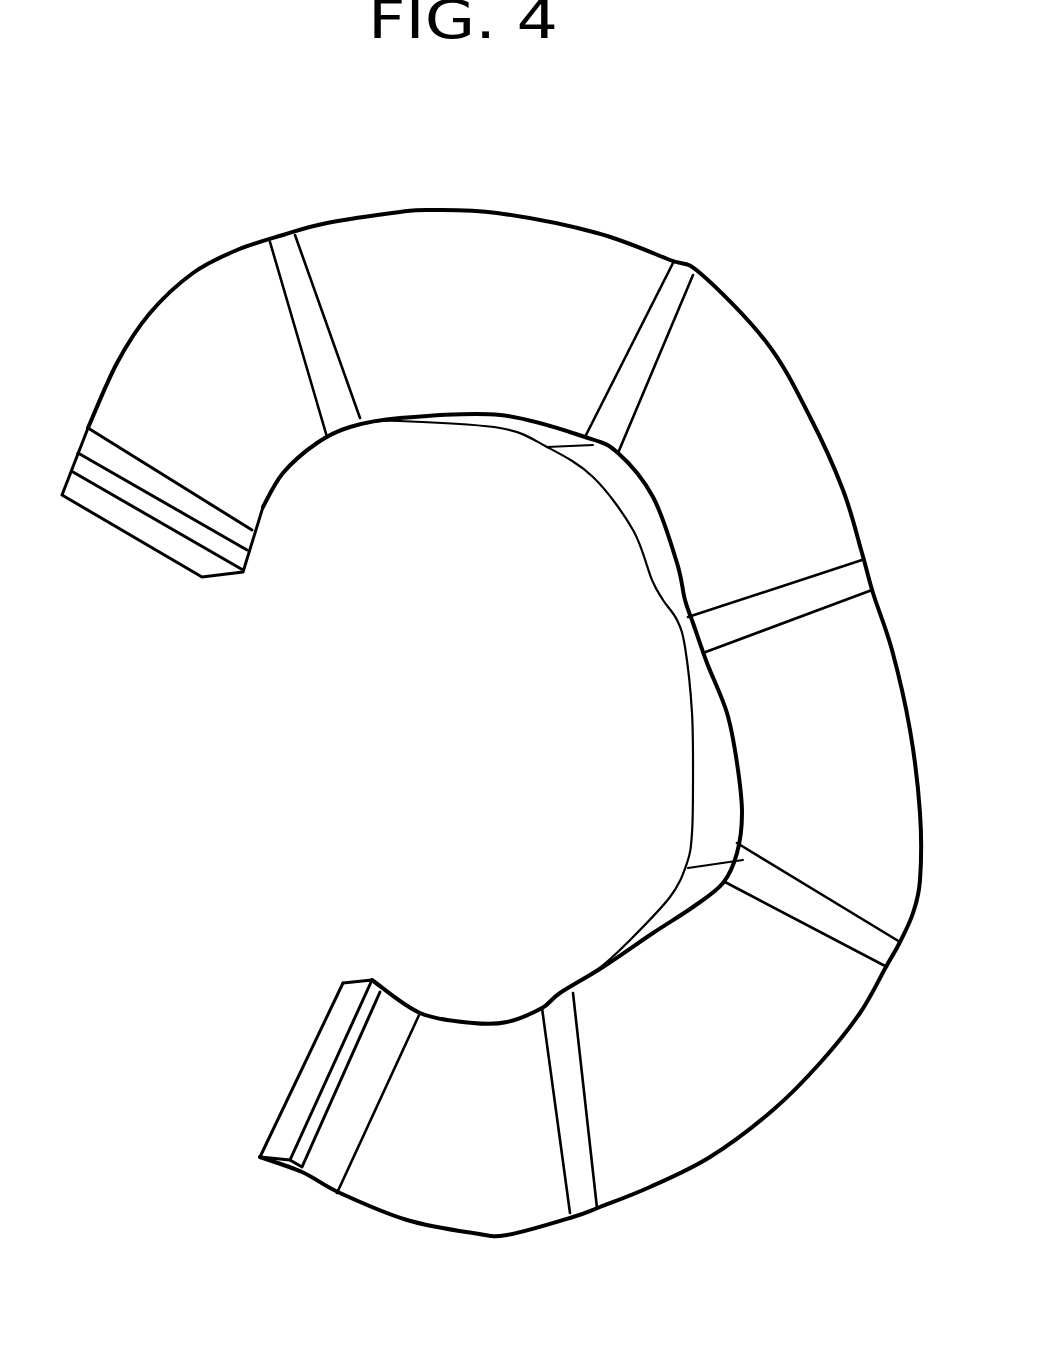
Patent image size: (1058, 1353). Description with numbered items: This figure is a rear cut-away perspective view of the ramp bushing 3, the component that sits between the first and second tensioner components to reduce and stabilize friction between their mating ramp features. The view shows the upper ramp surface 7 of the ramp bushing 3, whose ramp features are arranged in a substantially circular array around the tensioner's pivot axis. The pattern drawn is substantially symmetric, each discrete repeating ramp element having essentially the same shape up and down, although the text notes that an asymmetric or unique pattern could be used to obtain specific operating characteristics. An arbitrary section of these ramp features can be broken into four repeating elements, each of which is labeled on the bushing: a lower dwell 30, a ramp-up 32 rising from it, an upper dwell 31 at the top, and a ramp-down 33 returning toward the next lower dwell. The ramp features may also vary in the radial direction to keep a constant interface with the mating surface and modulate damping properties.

The ramp bushing 3 is at (767, 341).
The upper ramp surface 7 is at (545, 435).
The lower dwell 30 is at (688, 638).
The upper dwell 31 is at (742, 858).
The ramp-up 32 is at (812, 768).
The ramp-down 33 is at (600, 995).